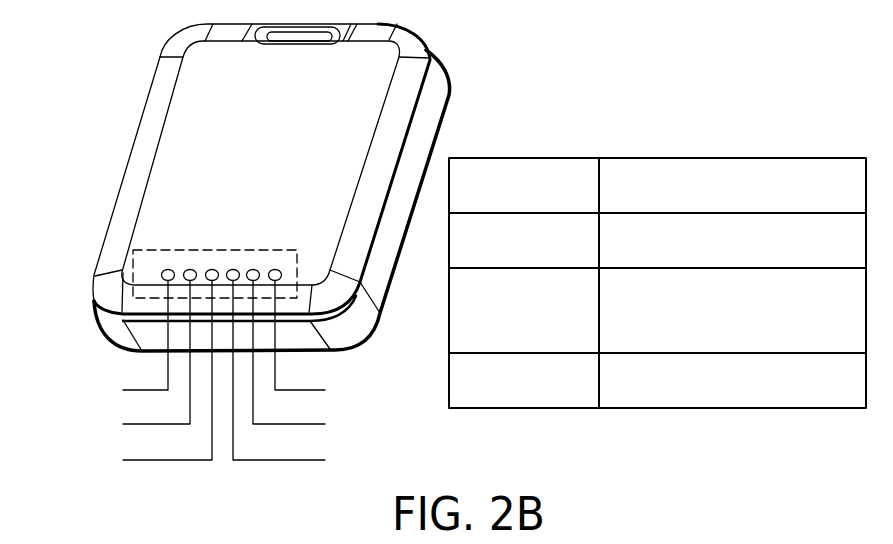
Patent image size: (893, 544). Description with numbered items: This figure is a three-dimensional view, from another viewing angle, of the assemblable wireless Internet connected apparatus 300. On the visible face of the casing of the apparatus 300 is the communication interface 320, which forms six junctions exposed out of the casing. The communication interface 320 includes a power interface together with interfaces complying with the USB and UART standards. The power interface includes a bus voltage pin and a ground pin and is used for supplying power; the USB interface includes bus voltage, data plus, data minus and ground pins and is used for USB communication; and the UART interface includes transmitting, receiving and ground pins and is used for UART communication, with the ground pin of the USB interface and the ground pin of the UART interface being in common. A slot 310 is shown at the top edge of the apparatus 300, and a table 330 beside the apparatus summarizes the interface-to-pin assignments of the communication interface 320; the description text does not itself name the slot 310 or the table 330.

The assemblable wireless Internet connected apparatus 300 is at (307, 250).
The strap slot 310 is at (299, 34).
The communication interface 320 is at (133, 256).
The pin assignment table 330 is at (657, 283).